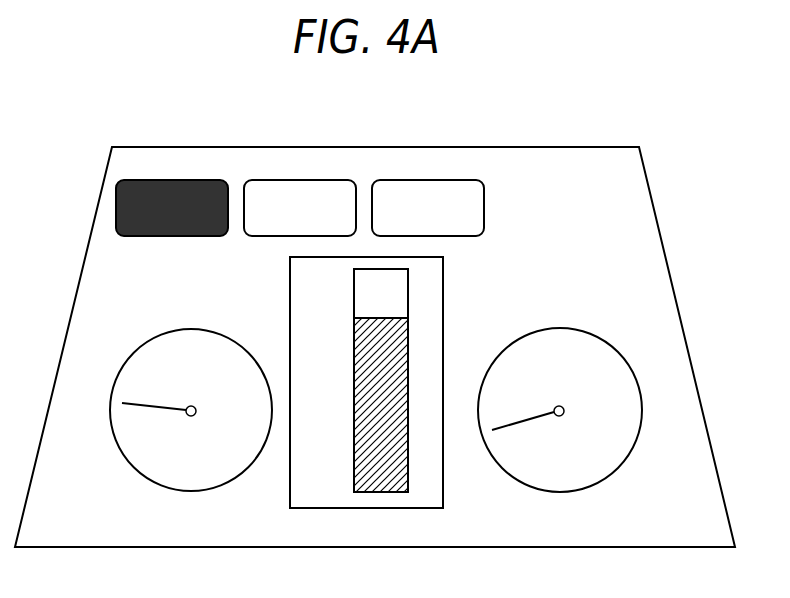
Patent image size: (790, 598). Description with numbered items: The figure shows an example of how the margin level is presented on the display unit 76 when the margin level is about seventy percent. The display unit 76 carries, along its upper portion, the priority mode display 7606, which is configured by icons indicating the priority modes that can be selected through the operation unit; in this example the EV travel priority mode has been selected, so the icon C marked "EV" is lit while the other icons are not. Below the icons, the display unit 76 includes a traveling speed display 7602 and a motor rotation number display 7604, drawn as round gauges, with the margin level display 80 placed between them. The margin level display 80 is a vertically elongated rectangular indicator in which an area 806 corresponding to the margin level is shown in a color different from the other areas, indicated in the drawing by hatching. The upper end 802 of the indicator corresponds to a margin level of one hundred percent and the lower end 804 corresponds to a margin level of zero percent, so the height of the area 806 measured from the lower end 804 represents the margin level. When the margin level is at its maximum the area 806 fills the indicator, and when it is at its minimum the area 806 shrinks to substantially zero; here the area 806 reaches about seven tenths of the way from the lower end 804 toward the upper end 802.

The display unit 76 is at (536, 168).
The priority mode display 7606 is at (300, 200).
The icon C is at (135, 237).
The motor rotation number display 7604 is at (115, 443).
The traveling speed display 7602 is at (637, 437).
The margin level display 80 is at (382, 389).
The upper end 802 is at (390, 266).
The area 806 is at (397, 368).
The lower end 804 is at (400, 493).